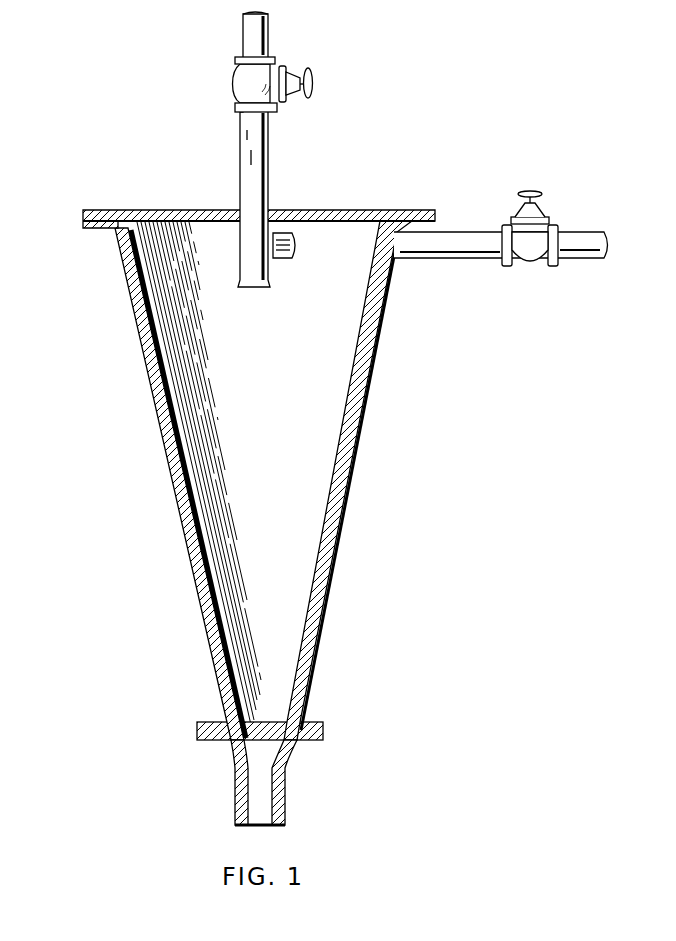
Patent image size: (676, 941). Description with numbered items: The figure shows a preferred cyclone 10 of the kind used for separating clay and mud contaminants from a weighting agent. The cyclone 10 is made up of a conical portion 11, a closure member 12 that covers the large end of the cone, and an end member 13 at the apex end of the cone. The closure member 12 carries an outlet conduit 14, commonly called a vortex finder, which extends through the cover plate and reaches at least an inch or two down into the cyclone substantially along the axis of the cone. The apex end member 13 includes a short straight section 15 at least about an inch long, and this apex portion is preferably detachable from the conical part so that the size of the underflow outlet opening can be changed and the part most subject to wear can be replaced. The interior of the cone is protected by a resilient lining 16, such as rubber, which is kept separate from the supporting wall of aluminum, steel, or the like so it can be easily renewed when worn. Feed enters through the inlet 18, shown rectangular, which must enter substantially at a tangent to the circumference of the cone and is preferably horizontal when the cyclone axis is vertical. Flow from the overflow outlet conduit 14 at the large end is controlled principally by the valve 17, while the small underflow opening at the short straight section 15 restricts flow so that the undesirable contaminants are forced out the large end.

The cyclone 10 is at (321, 418).
The conical portion 11 is at (158, 425).
The closure member 12 is at (133, 210).
The end member 13 is at (232, 762).
The outlet conduit 14 is at (242, 138).
The short straight section 15 is at (234, 800).
The resilient lining 16 is at (338, 428).
The valve 17 is at (238, 78).
The inlet 18 is at (297, 242).